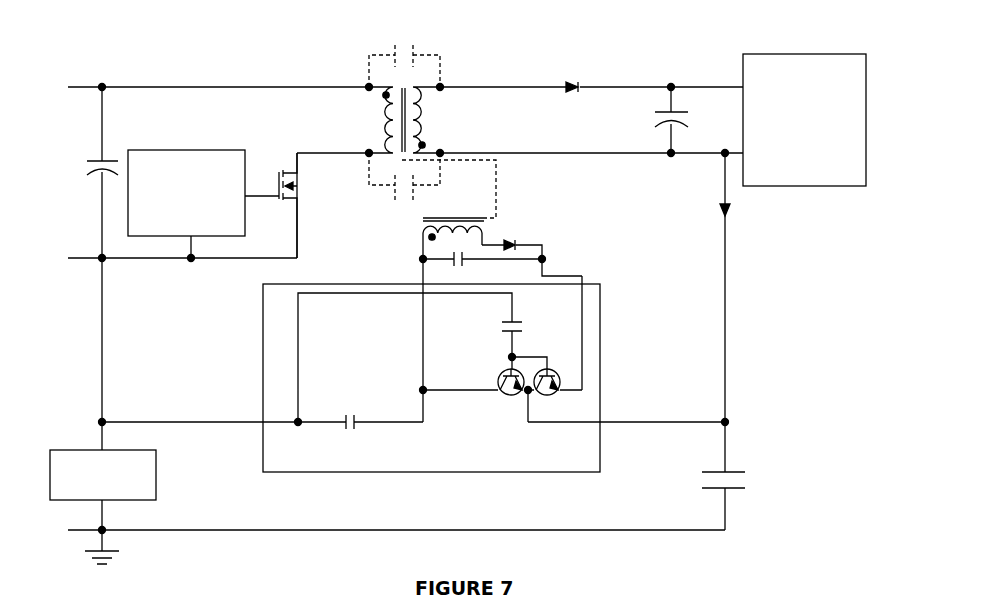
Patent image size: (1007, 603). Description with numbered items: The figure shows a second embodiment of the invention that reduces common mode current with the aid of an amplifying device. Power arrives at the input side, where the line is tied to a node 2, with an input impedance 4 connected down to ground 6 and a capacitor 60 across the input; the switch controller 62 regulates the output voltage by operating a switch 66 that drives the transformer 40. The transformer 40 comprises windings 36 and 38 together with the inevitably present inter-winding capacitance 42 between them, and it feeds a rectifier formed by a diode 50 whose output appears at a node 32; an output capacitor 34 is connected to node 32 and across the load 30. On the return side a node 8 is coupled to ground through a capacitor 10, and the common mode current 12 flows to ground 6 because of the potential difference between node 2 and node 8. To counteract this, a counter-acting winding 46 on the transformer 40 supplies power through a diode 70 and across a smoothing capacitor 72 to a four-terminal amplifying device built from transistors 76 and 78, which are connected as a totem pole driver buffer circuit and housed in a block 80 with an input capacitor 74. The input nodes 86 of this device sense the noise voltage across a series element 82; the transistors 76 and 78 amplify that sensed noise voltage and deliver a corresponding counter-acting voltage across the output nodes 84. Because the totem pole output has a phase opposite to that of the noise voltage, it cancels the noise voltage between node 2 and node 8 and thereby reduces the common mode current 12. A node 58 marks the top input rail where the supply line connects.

The node 2 is at (96, 263).
The input impedance 4 is at (157, 453).
The ground 6 is at (118, 524).
The node 8 is at (739, 416).
The capacitor 10 is at (750, 478).
The common mode current 12 is at (730, 215).
The load 30 is at (804, 120).
The node 32 is at (676, 76).
The output capacitor 34 is at (713, 147).
The winding 36 is at (383, 112).
The winding 38 is at (428, 112).
The transformer 40 is at (403, 104).
The inter-winding capacitance 42 is at (405, 44).
The counter-acting winding 46 is at (412, 228).
The diode 50 is at (577, 75).
The input node 58 is at (112, 85).
The input capacitor 60 is at (90, 158).
The switch controller 62 is at (186, 206).
The switch 66 is at (278, 166).
The diode 70 is at (514, 243).
The smoothing capacitor 72 is at (455, 268).
The capacitor 74 is at (500, 330).
The transistor 76 is at (555, 365).
The transistor 78 is at (497, 378).
The current sense circuit 80 is at (405, 433).
The series element 82 is at (350, 438).
The output nodes 84 is at (530, 409).
The input nodes 86 is at (414, 378).